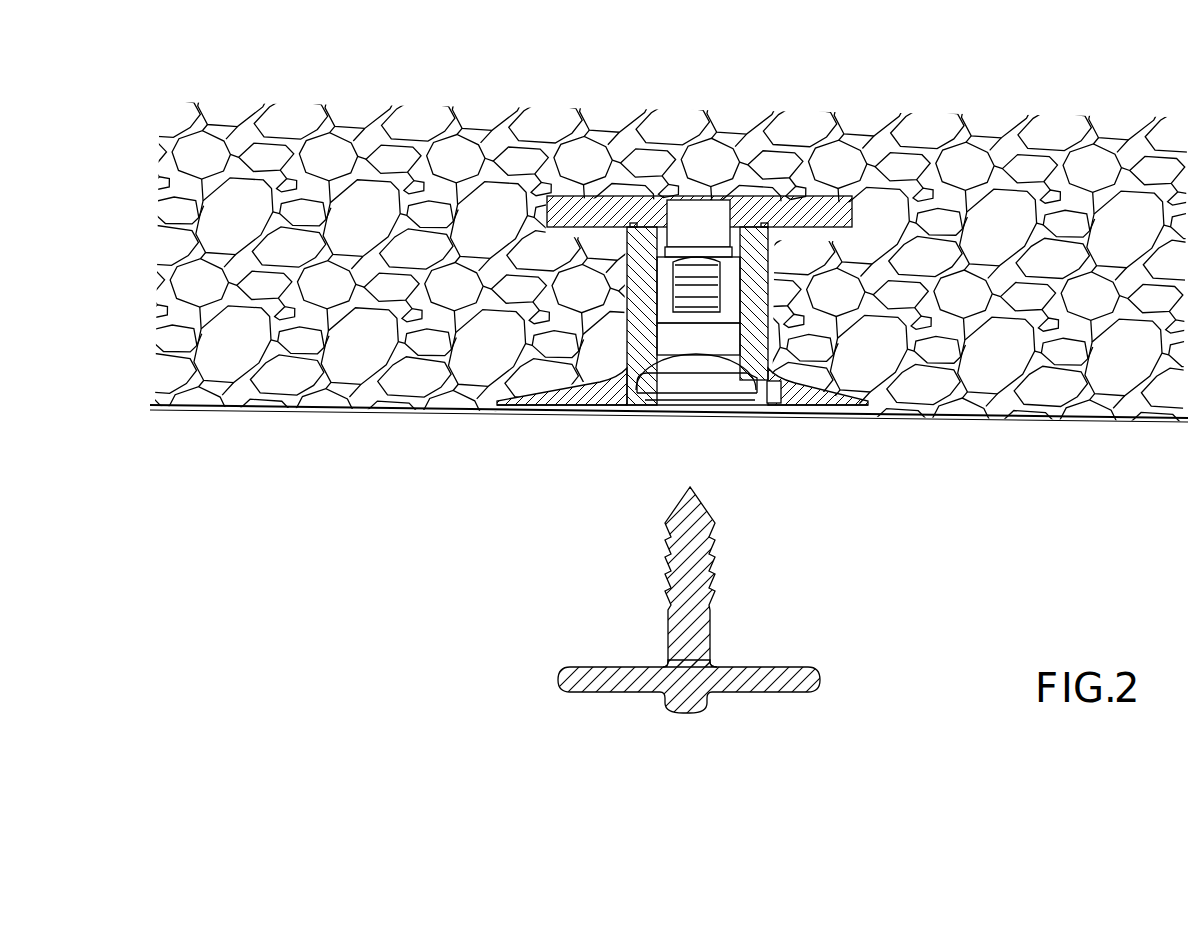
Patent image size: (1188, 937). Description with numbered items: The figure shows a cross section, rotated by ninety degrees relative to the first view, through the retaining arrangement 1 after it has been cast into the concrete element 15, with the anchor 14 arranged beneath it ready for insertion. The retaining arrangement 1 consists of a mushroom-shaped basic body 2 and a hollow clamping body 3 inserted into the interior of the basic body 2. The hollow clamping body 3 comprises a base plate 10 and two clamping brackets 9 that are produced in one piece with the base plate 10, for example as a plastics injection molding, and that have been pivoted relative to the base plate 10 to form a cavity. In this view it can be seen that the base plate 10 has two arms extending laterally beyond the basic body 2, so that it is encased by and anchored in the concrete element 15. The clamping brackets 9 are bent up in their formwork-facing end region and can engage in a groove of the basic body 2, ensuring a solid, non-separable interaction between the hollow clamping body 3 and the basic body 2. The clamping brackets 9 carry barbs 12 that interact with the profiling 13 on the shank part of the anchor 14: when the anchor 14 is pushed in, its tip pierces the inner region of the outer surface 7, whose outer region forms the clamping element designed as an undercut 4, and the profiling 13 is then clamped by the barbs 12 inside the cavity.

The retaining arrangement 1 is at (723, 265).
The basic body 2 is at (632, 306).
The hollow clamping body 3 is at (681, 210).
The undercut 4 is at (767, 380).
The outer surface 7 is at (647, 363).
The clamping brackets 9 is at (670, 290).
The base plate 10 is at (807, 200).
The barbs 12 is at (700, 303).
The profiling 13 is at (710, 580).
The anchor 14 is at (750, 677).
The concrete element 15 is at (960, 163).